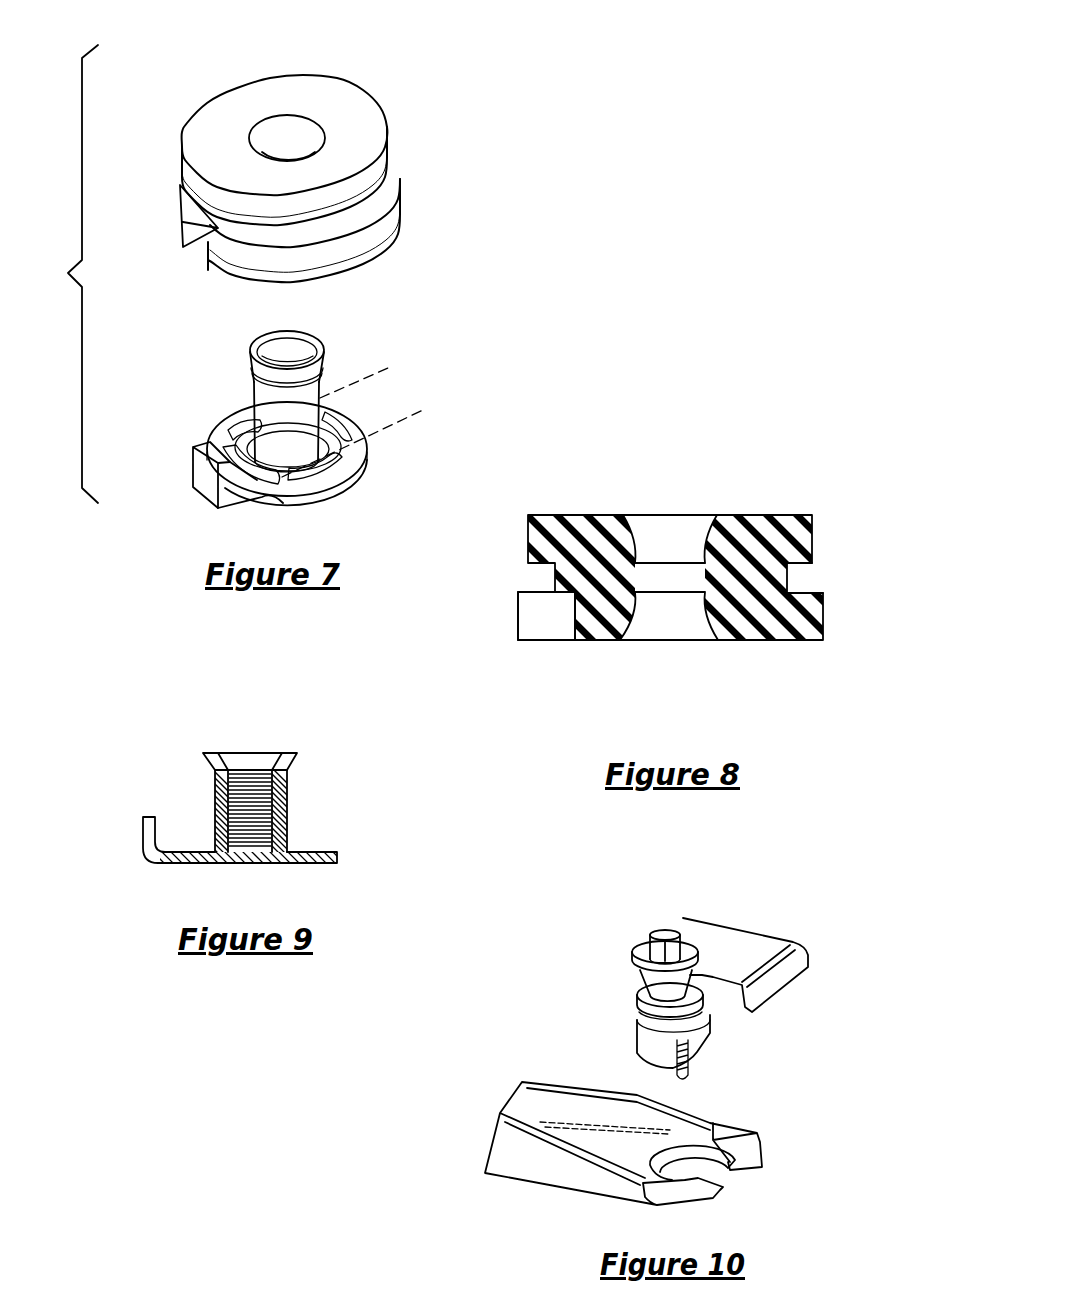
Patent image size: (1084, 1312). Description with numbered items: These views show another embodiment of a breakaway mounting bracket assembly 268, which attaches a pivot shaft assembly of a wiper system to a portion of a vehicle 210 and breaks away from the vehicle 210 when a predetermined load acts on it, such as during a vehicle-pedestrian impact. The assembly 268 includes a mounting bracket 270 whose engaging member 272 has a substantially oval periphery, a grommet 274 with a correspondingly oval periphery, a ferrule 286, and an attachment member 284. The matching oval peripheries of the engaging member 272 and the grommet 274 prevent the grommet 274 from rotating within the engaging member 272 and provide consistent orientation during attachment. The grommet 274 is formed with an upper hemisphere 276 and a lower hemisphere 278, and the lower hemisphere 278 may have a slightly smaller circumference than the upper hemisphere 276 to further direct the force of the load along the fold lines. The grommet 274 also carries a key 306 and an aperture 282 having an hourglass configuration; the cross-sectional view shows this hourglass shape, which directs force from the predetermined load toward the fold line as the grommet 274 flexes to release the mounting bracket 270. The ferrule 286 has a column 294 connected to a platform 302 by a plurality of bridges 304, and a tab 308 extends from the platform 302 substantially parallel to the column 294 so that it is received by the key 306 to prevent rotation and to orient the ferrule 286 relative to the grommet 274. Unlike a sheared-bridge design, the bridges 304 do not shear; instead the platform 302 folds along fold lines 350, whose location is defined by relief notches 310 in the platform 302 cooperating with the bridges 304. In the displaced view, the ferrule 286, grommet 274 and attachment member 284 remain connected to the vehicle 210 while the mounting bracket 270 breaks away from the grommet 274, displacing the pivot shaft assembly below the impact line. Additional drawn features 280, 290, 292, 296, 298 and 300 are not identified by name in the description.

In FIG. 10, the vehicle 210 is at (738, 946).
In FIG. 10, the breakaway mounting bracket assembly 268 is at (638, 1043).
In FIG. 10, the mounting bracket 270 is at (520, 1180).
In FIG. 10, the engaging member 272 is at (738, 1172).
In FIG. 7, the grommet 274 is at (299, 163).
In FIG. 8, the grommet 274 is at (642, 567).
In FIG. 10, the grommet 274 is at (683, 1003).
In FIG. 7, the upper hemisphere 276 is at (390, 125).
In FIG. 8, the upper hemisphere 276 is at (775, 513).
In FIG. 7, the lower hemisphere 278 is at (400, 226).
In FIG. 8, the lower hemisphere 278 is at (593, 642).
In FIG. 7, the groove 280 is at (390, 178).
In FIG. 8, the groove 280 is at (800, 572).
In FIG. 10, the groove 280 is at (634, 982).
In FIG. 7, the aperture 282 is at (285, 128).
In FIG. 8, the aperture 282 is at (692, 642).
In FIG. 10, the attachment member 284 is at (653, 924).
In FIG. 7, the ferrule 286 is at (290, 418).
In FIG. 9, the ferrule 286 is at (220, 776).
In FIG. 10, the threaded shank 290 is at (692, 1062).
In FIG. 10, the washer 292 is at (645, 948).
In FIG. 7, the column 294 is at (268, 410).
In FIG. 9, the column 294 is at (213, 797).
In FIG. 7, the bore 296 is at (288, 340).
In FIG. 9, the bore 296 is at (265, 752).
In FIG. 7, the flared collar 298 is at (248, 352).
In FIG. 9, the flared collar 298 is at (205, 753).
In FIG. 9, the internal threads 300 is at (260, 790).
In FIG. 7, the platform 302 is at (350, 480).
In FIG. 9, the platform 302 is at (322, 852).
In FIG. 10, the platform 302 is at (645, 1046).
In FIG. 7, the bridges 304 is at (345, 447).
In FIG. 7, the key 306 is at (185, 235).
In FIG. 8, the key 306 is at (545, 624).
In FIG. 7, the tab 308 is at (198, 485).
In FIG. 9, the tab 308 is at (143, 825).
In FIG. 7, the relief notches 310 is at (265, 498).
In FIG. 7, the fold lines 350 is at (378, 374).